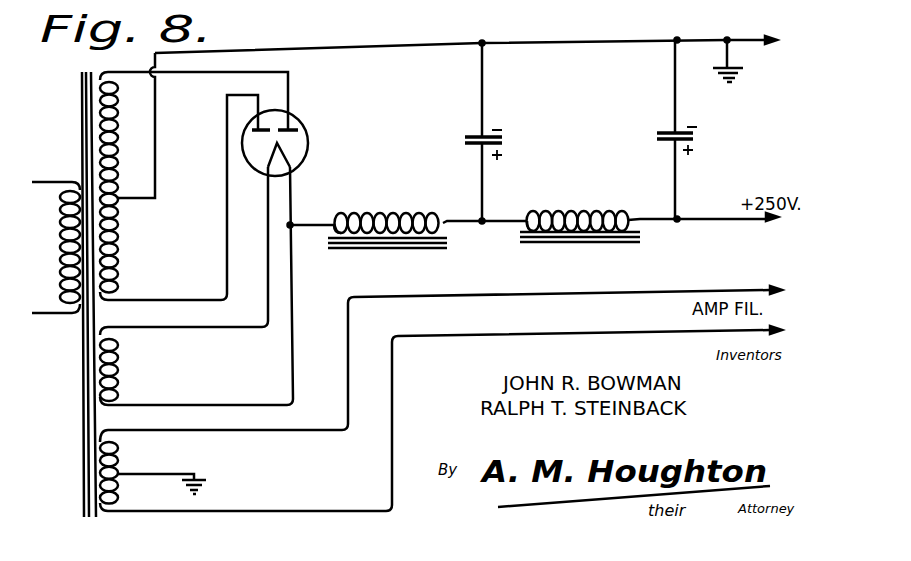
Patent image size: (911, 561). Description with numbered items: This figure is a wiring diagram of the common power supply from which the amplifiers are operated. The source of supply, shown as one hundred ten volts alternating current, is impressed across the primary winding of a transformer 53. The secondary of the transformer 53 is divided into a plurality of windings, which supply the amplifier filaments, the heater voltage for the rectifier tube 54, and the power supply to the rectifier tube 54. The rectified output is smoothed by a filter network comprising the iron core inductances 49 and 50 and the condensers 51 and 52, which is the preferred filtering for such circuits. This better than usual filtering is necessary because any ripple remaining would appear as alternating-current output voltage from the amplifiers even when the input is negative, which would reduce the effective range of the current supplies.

The transformer 53 is at (92, 67).
The rectifier tube 54 is at (311, 139).
The iron core inductance 49 is at (412, 213).
The iron core inductance 50 is at (590, 212).
The condenser 51 is at (505, 140).
The condenser 52 is at (695, 138).